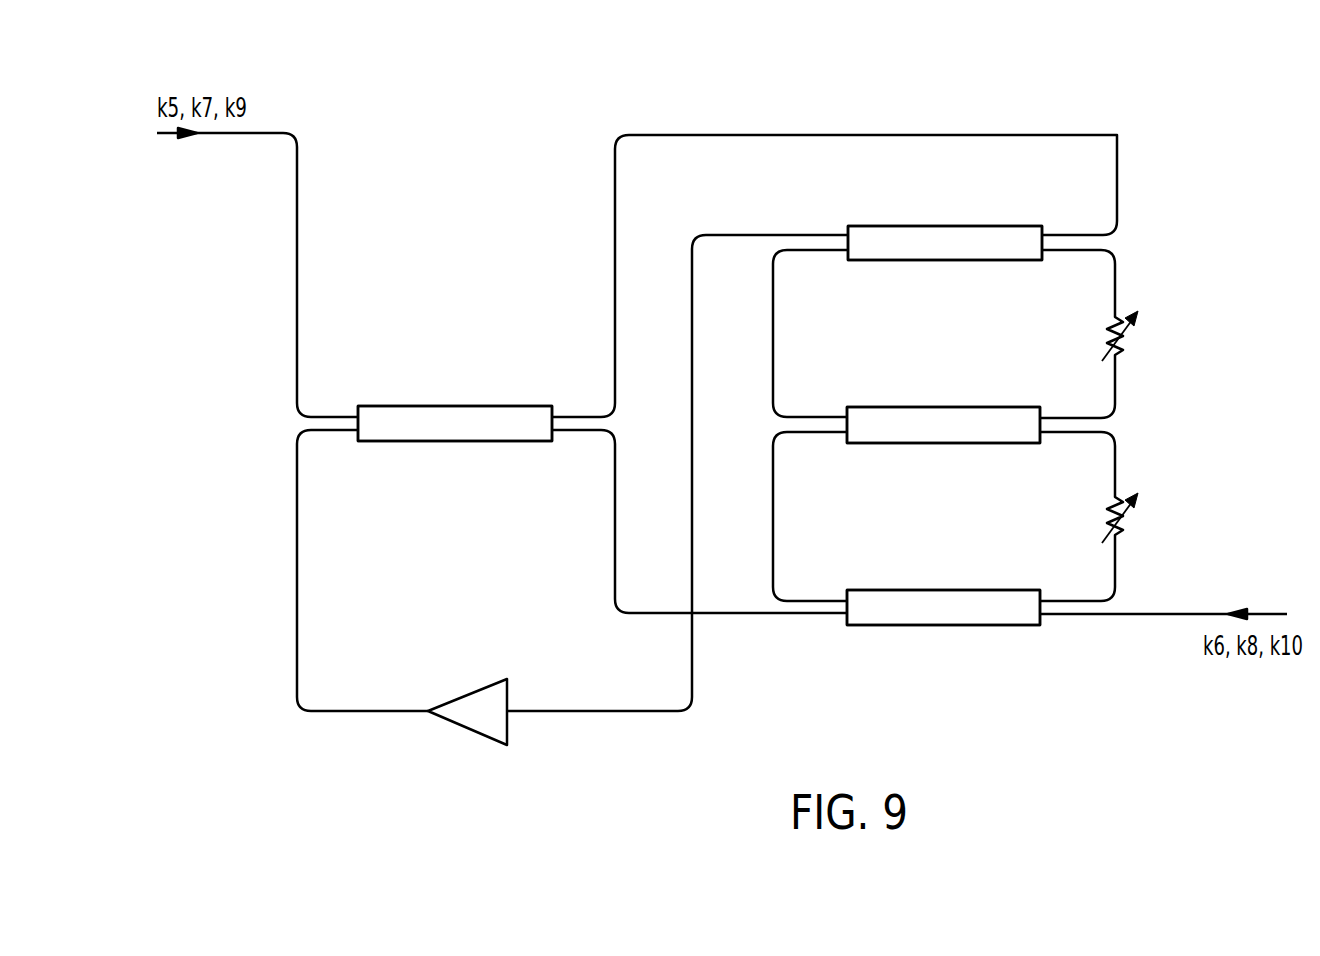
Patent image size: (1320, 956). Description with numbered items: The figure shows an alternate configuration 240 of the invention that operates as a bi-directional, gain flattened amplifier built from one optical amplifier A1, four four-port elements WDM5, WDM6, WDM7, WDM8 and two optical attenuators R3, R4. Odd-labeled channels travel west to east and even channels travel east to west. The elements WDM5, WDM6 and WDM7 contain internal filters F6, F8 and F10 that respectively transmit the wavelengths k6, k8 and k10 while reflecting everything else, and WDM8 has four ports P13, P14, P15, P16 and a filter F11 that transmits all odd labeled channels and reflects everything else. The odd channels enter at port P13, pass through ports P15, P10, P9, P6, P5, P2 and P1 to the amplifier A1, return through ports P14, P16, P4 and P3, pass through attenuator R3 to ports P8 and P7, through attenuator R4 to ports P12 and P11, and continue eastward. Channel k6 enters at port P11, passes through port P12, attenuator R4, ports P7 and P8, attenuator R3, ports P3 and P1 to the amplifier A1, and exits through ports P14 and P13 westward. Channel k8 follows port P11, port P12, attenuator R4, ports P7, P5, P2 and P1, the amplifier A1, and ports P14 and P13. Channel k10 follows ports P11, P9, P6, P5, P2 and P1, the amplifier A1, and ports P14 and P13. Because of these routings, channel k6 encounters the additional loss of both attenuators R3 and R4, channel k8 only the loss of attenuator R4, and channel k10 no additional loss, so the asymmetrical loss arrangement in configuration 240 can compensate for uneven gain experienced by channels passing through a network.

The alternate configuration 240 is at (1237, 135).
The optical amplifier A1 is at (507, 679).
The internal filter F6 is at (945, 243).
The internal filter F8 is at (943, 425).
The internal filter F10 is at (943, 607).
The filter F11 is at (455, 423).
The four-port element WDM5 is at (936, 226).
The four-port element WDM6 is at (936, 407).
The four-port element WDM7 is at (936, 590).
The four-port element WDM8 is at (449, 406).
The optical attenuator R3 is at (1102, 334).
The optical attenuator R4 is at (1102, 516).
The port P1 is at (828, 235).
The port P2 is at (821, 250).
The port P3 is at (1083, 250).
The port P4 is at (1117, 188).
The port P5 is at (830, 417).
The port P6 is at (823, 432).
The port P7 is at (1083, 432).
The port P8 is at (1080, 417).
The port P9 is at (830, 600).
The port P10 is at (819, 614).
The port P11 is at (1079, 614).
The port P12 is at (1080, 600).
The port P13 is at (299, 370).
The port P14 is at (299, 507).
The port P15 is at (614, 506).
The port P16 is at (614, 372).